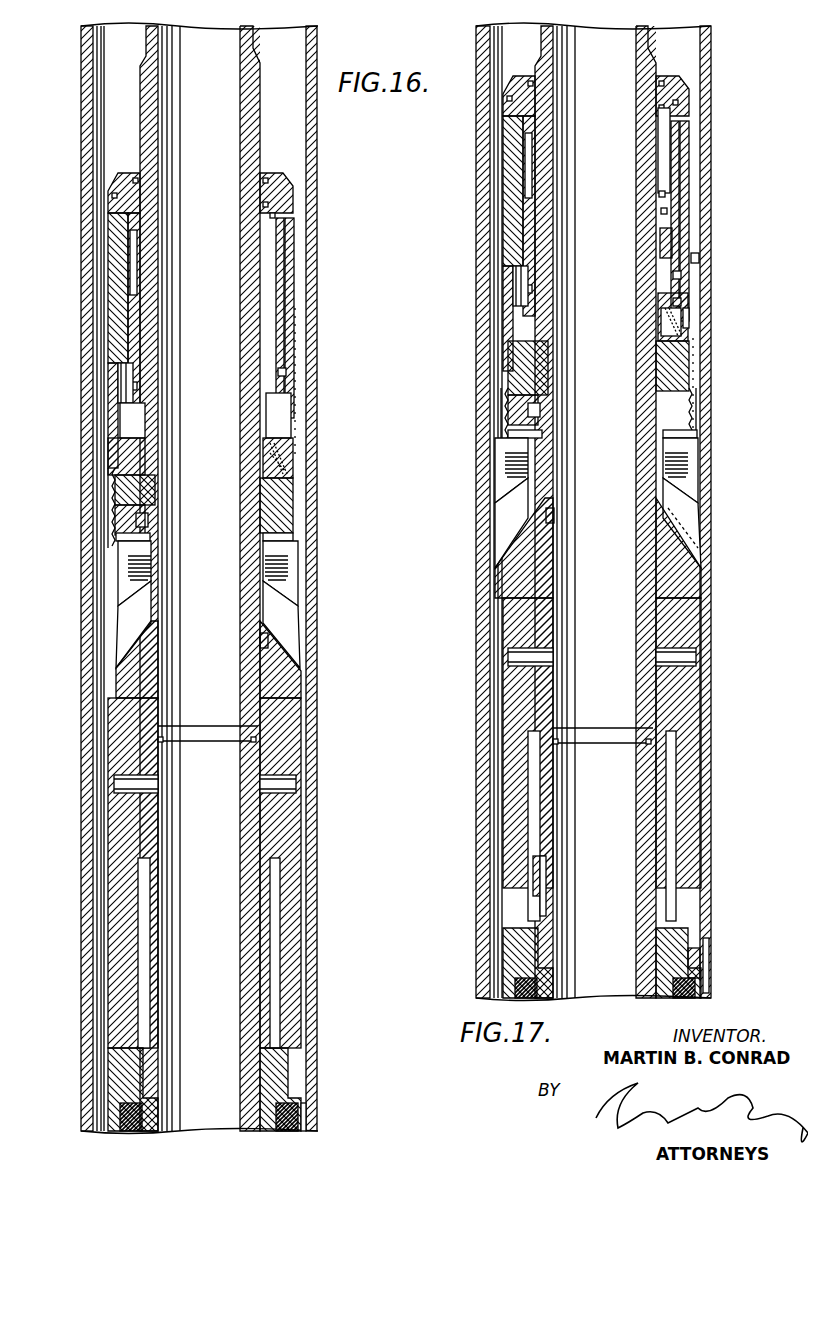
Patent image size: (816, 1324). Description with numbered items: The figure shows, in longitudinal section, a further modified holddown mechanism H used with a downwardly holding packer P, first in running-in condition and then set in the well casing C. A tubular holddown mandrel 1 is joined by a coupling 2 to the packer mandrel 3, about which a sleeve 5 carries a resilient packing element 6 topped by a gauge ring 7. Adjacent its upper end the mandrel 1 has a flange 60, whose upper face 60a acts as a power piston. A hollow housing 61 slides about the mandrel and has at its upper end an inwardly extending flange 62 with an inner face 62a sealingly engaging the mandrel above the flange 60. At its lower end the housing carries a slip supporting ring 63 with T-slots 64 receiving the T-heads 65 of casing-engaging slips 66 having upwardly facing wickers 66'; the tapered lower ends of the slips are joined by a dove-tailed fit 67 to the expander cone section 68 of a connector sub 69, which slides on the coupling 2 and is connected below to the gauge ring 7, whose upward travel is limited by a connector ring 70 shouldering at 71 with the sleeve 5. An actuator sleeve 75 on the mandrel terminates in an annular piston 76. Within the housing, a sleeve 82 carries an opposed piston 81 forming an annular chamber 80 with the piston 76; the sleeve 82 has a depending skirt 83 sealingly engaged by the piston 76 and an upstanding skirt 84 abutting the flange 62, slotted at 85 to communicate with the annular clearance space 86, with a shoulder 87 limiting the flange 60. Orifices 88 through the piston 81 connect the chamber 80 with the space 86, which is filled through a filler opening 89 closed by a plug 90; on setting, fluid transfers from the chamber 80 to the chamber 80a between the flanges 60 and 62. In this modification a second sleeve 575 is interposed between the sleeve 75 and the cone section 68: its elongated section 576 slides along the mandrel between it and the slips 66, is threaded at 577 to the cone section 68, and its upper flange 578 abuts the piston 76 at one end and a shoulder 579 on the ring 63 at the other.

In FIG. 16, the holddown mandrel 1 is at (240, 78).
In FIG. 17, the holddown mandrel 1 is at (628, 70).
In FIG. 16, the coupling 2 is at (252, 718).
In FIG. 17, the coupling 2 is at (640, 757).
In FIG. 16, the packer mandrel 3 is at (245, 1022).
In FIG. 17, the packer mandrel 3 is at (640, 895).
In FIG. 16, the sleeve 5 is at (265, 1125).
In FIG. 17, the sleeve 5 is at (655, 968).
In FIG. 16, the packing element 6 is at (288, 1125).
In FIG. 17, the packing element 6 is at (688, 982).
In FIG. 17, the gauge ring 7 is at (688, 960).
In FIG. 16, the well casing C is at (305, 272).
In FIG. 17, the well casing C is at (700, 627).
In FIG. 16, the holddown mechanism H is at (296, 371).
In FIG. 17, the holddown mechanism H is at (690, 405).
In FIG. 16, the packer device P is at (296, 1108).
In FIG. 17, the packer device P is at (700, 935).
In FIG. 16, the mandrel flange 60 is at (125, 215).
In FIG. 17, the mandrel flange 60 is at (660, 190).
In FIG. 17, the upper face of mandrel flange 60a is at (651, 185).
In FIG. 17, the housing 61 is at (688, 250).
In FIG. 16, the housing flange 62 is at (270, 168).
In FIG. 17, the housing flange 62 is at (683, 75).
In FIG. 16, the inner face of housing flange 62a is at (256, 192).
In FIG. 17, the inner face of housing flange 62a is at (651, 105).
In FIG. 16, the slip supporting ring 63 is at (104, 490).
In FIG. 17, the slip supporting ring 63 is at (497, 390).
In FIG. 16, the T-slots 64 is at (108, 527).
In FIG. 17, the T-slots 64 is at (500, 430).
In FIG. 16, the T-heads 65 is at (112, 545).
In FIG. 17, the T-heads 65 is at (500, 447).
In FIG. 16, the holddown slips 66 is at (172, 624).
In FIG. 17, the holddown slips 66 is at (623, 519).
In FIG. 17, the wickers 66' is at (712, 528).
In FIG. 16, the dove-tailed fit 67 is at (110, 650).
In FIG. 17, the dove-tailed fit 67 is at (500, 545).
In FIG. 16, the expander cone section 68 is at (275, 735).
In FIG. 17, the expander cone section 68 is at (665, 587).
In FIG. 16, the connector sub 69 is at (283, 880).
In FIG. 17, the connector sub 69 is at (672, 730).
In FIG. 17, the connector ring 70 is at (530, 880).
In FIG. 17, the shoulder 71 is at (525, 852).
In FIG. 16, the actuator sleeve 75 is at (128, 415).
In FIG. 17, the actuator sleeve 75 is at (655, 317).
In FIG. 16, the annular piston 76 is at (110, 455).
In FIG. 17, the annular piston 76 is at (680, 306).
In FIG. 16, the annular chamber 80 is at (275, 412).
In FIG. 17, the upper chamber 80a is at (656, 143).
In FIG. 16, the opposed piston 81 is at (125, 385).
In FIG. 17, the opposed piston 81 is at (510, 275).
In FIG. 17, the sleeve 82 is at (655, 232).
In FIG. 17, the skirt 83 is at (672, 292).
In FIG. 16, the skirt 84 is at (272, 230).
In FIG. 17, the skirt 84 is at (678, 113).
In FIG. 16, the radial slot 85 is at (110, 188).
In FIG. 17, the radial slot 85 is at (500, 100).
In FIG. 16, the annular clearance space 86 is at (279, 250).
In FIG. 17, the annular clearance space 86 is at (676, 172).
In FIG. 17, the shoulder 87 is at (653, 203).
In FIG. 16, the orifices 88 is at (121, 378).
In FIG. 17, the orifices 88 is at (520, 293).
In FIG. 16, the filler opening 89 is at (272, 442).
In FIG. 17, the filler opening 89 is at (655, 293).
In FIG. 16, the closure plug 90 is at (278, 466).
In FIG. 17, the closure plug 90 is at (672, 325).
In FIG. 16, the second sleeve 575 is at (120, 517).
In FIG. 17, the second sleeve 575 is at (530, 393).
In FIG. 16, the elongated sleeve section 576 is at (252, 588).
In FIG. 17, the elongated sleeve section 576 is at (540, 448).
In FIG. 16, the threaded connection 577 is at (254, 630).
In FIG. 17, the threaded connection 577 is at (540, 508).
In FIG. 16, the flange 578 is at (140, 480).
In FIG. 17, the flange 578 is at (530, 352).
In FIG. 16, the shoulder 579 is at (138, 498).
In FIG. 17, the shoulder 579 is at (530, 415).